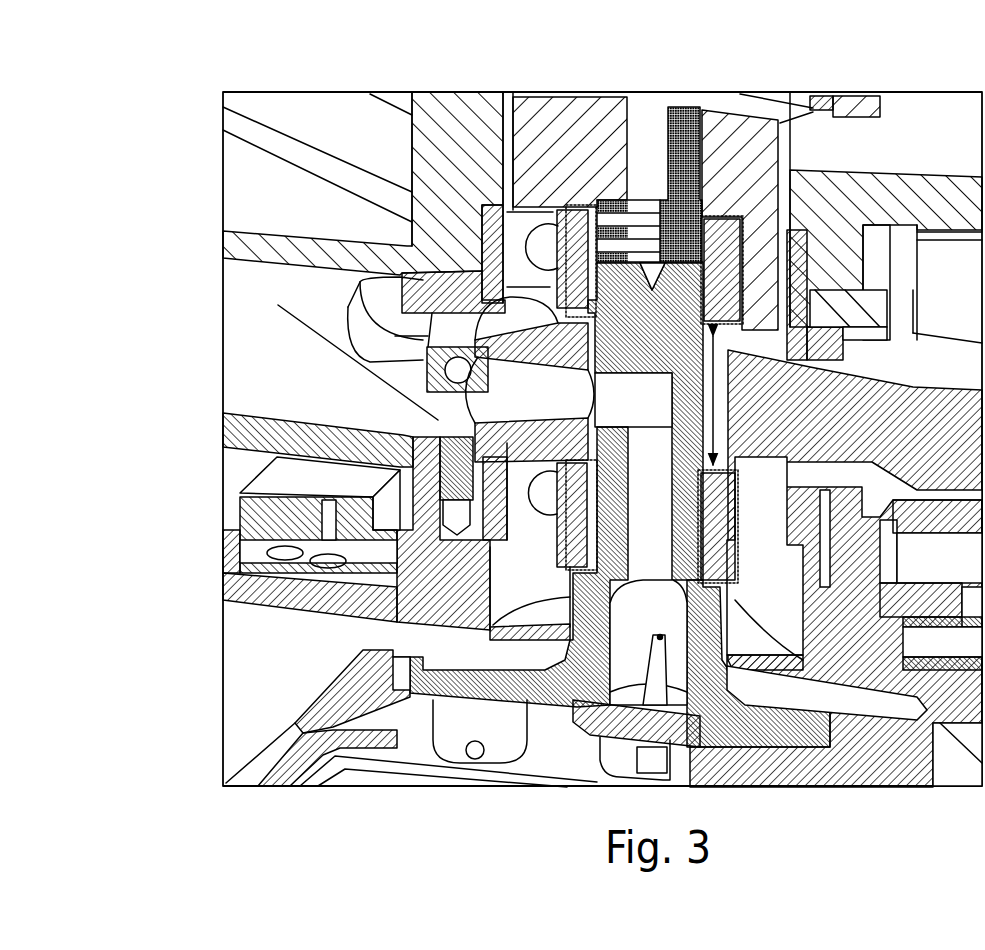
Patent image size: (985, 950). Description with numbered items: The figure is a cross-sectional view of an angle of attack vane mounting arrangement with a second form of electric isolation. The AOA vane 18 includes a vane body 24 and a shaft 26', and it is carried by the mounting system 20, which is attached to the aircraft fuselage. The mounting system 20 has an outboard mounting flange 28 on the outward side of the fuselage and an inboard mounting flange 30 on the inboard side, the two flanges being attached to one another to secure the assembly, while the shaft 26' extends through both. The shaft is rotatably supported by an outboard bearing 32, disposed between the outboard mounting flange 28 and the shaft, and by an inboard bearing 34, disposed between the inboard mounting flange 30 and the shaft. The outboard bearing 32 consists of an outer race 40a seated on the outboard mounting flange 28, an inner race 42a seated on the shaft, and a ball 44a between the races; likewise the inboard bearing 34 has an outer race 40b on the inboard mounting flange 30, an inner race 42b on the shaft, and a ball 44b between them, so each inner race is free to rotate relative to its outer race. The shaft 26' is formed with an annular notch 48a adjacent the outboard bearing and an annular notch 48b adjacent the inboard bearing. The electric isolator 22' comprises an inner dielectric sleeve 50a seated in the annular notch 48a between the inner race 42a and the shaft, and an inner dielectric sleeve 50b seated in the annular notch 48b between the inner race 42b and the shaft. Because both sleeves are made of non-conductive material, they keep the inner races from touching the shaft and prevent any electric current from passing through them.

The AOA vane 18 is at (320, 690).
The mounting system 20 is at (216, 367).
The electric isolator 22' is at (836, 561).
The vane body 24 is at (290, 768).
The shaft 26' is at (807, 663).
The outboard mounting flange 28 is at (240, 587).
The inboard mounting flange 30 is at (243, 228).
The outboard bearing 32 is at (477, 517).
The inboard bearing 34 is at (412, 246).
The outer race 40a is at (407, 430).
The outer race 40b is at (478, 253).
The inner race 42a is at (557, 543).
The inner race 42b is at (573, 237).
The ball 44a is at (470, 483).
The ball 44b is at (500, 212).
The annular notch 48a is at (603, 583).
The annular notch 48b is at (600, 330).
The inner dielectric sleeve 50a is at (723, 583).
The inner dielectric sleeve 50b is at (705, 223).